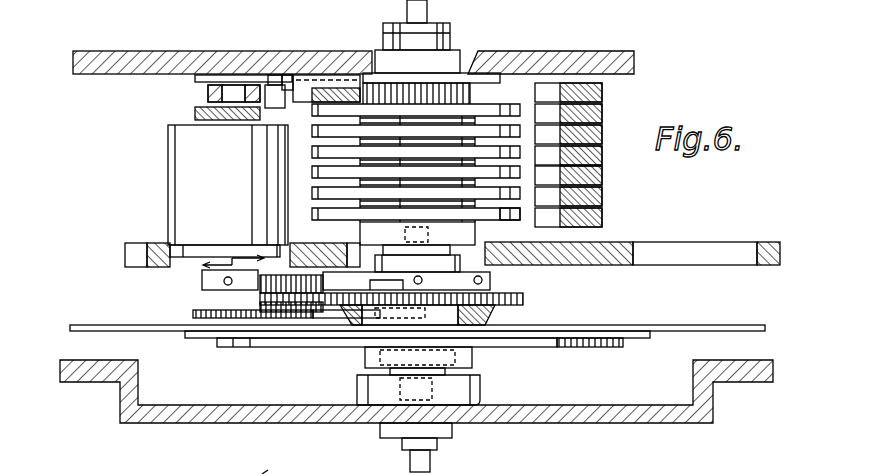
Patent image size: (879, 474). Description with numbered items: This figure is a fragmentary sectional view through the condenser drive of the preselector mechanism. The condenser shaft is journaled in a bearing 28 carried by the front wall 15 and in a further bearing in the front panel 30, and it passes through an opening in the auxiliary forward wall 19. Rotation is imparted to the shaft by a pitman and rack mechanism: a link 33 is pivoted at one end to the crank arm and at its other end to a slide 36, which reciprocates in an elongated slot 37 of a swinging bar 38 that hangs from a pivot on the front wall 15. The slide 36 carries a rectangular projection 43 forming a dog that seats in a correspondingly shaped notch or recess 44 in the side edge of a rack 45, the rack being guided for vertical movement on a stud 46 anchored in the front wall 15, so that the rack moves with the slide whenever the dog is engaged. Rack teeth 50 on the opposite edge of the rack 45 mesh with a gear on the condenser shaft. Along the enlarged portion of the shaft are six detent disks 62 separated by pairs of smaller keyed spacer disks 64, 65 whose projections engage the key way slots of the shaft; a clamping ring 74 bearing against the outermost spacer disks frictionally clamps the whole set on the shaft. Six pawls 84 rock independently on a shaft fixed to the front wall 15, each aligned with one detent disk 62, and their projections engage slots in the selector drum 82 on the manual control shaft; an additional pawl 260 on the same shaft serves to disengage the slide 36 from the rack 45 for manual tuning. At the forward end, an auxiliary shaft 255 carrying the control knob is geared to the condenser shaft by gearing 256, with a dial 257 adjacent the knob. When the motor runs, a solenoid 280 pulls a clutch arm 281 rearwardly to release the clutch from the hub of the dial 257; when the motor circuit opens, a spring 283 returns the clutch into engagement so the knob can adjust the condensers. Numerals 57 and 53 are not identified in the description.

The front wall 15 is at (154, 52).
The bearing 28 is at (448, 78).
The shaft 57 is at (450, 3).
The rack 45 is at (308, 87).
The rack teeth 50 is at (350, 80).
The stud 46 is at (311, 100).
The rectangular projection 43 is at (280, 78).
The notch or recess 44 is at (272, 78).
The swinging bar 38 is at (207, 93).
The elongated slot 37 is at (230, 92).
The slide 36 is at (268, 85).
The link 33 is at (210, 120).
The solenoid 280 is at (182, 173).
The spacer disk 65 is at (482, 117).
The detent disks 62 is at (510, 107).
The spacer disk 64 is at (482, 205).
The clamping ring 74 is at (367, 228).
The clutch arm 281 is at (490, 284).
The gearing 256 is at (220, 300).
The dial 257 is at (680, 326).
The auxiliary shaft 255 is at (433, 460).
The front panel 30 is at (253, 405).
The auxiliary forward wall 19 is at (152, 243).
The frame end 53 is at (762, 266).
The spring 283 is at (220, 258).
The additional pawl 260 is at (602, 92).
The pawls 84 is at (605, 192).
The selector drum 82 is at (281, 464).